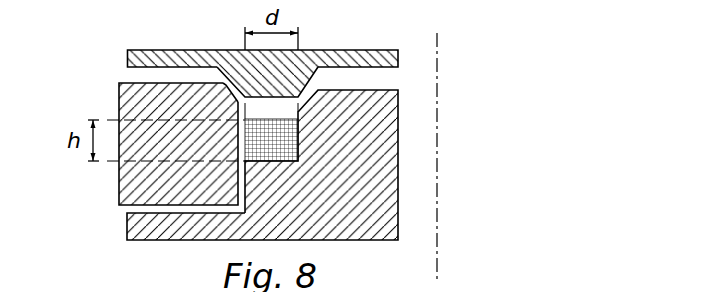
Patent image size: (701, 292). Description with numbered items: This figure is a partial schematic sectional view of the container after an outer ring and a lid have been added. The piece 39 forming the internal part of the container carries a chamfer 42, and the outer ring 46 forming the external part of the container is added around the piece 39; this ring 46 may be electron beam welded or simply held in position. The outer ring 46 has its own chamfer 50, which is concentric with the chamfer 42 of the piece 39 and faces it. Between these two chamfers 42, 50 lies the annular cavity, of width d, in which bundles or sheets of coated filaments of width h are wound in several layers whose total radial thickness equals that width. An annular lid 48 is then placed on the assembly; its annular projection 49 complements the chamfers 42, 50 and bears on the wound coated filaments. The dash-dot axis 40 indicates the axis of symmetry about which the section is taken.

The piece forming the internal part of the container 39 is at (368, 241).
The central axis 40 is at (437, 58).
The chamfer 42 is at (303, 107).
The outer ring 46 is at (127, 187).
The annular lid 48 is at (340, 50).
The annular projection 49 is at (283, 88).
The chamfer 50 is at (225, 87).